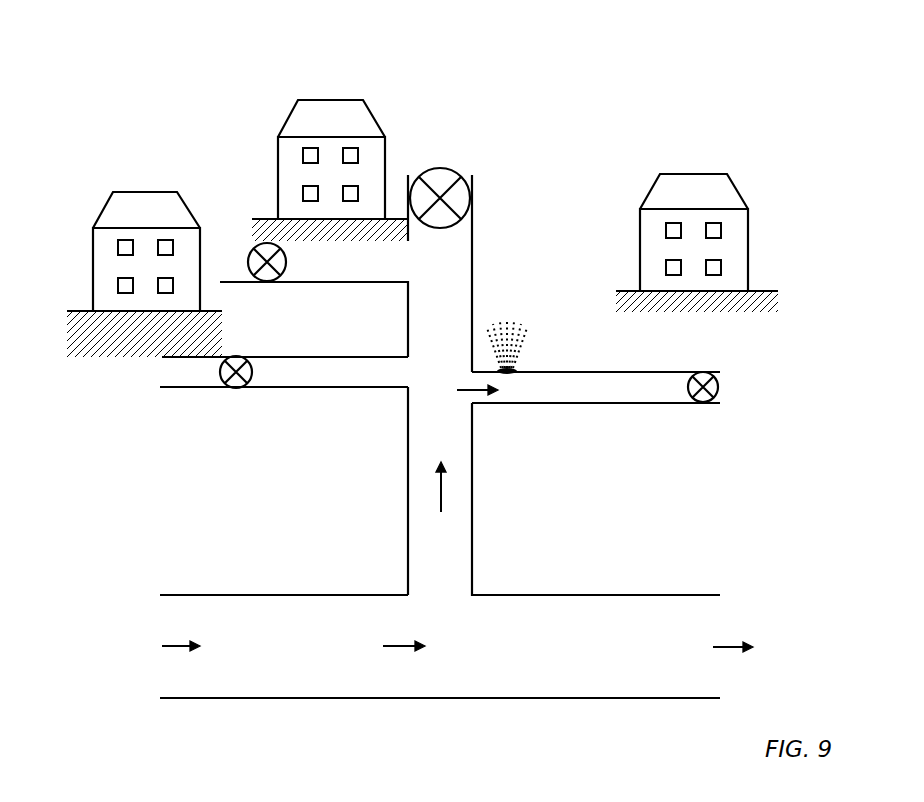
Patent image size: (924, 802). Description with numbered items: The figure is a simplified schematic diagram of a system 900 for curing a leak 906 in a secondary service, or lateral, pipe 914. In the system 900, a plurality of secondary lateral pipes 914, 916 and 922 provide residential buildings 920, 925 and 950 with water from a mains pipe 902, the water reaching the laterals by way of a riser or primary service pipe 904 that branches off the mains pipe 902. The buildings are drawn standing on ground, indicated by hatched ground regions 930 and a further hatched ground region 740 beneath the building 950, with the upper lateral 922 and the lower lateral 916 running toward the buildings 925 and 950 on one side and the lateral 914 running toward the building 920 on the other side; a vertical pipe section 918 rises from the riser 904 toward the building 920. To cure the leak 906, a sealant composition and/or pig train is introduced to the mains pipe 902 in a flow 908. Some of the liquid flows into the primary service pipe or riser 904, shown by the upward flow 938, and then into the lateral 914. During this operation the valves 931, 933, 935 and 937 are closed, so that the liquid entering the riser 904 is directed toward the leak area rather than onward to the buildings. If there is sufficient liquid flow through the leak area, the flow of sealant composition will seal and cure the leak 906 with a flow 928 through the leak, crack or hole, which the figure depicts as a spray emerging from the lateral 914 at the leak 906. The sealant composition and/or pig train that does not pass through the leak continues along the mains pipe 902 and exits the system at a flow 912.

The system 900 is at (860, 150).
The mains pipe 902 is at (318, 595).
The primary service pipe 904 is at (473, 498).
The leak 906 is at (522, 370).
The flow 908 is at (157, 649).
The flow 912 is at (757, 648).
The secondary service (lateral) pipe 914 is at (524, 405).
The secondary lateral pipe 916 is at (335, 388).
The vertical supply pipe 918 is at (474, 255).
The residential building 920 is at (700, 174).
The secondary lateral pipe 922 is at (344, 283).
The residential building 925 is at (155, 192).
The flow 928 is at (509, 332).
The ground 930 is at (77, 311).
The valve 931 is at (719, 387).
The valve 933 is at (287, 262).
The valve 935 is at (250, 388).
The valve 937 is at (440, 168).
The upward flow 938 is at (442, 501).
The residential building 950 is at (340, 100).
The ground 740 is at (262, 219).